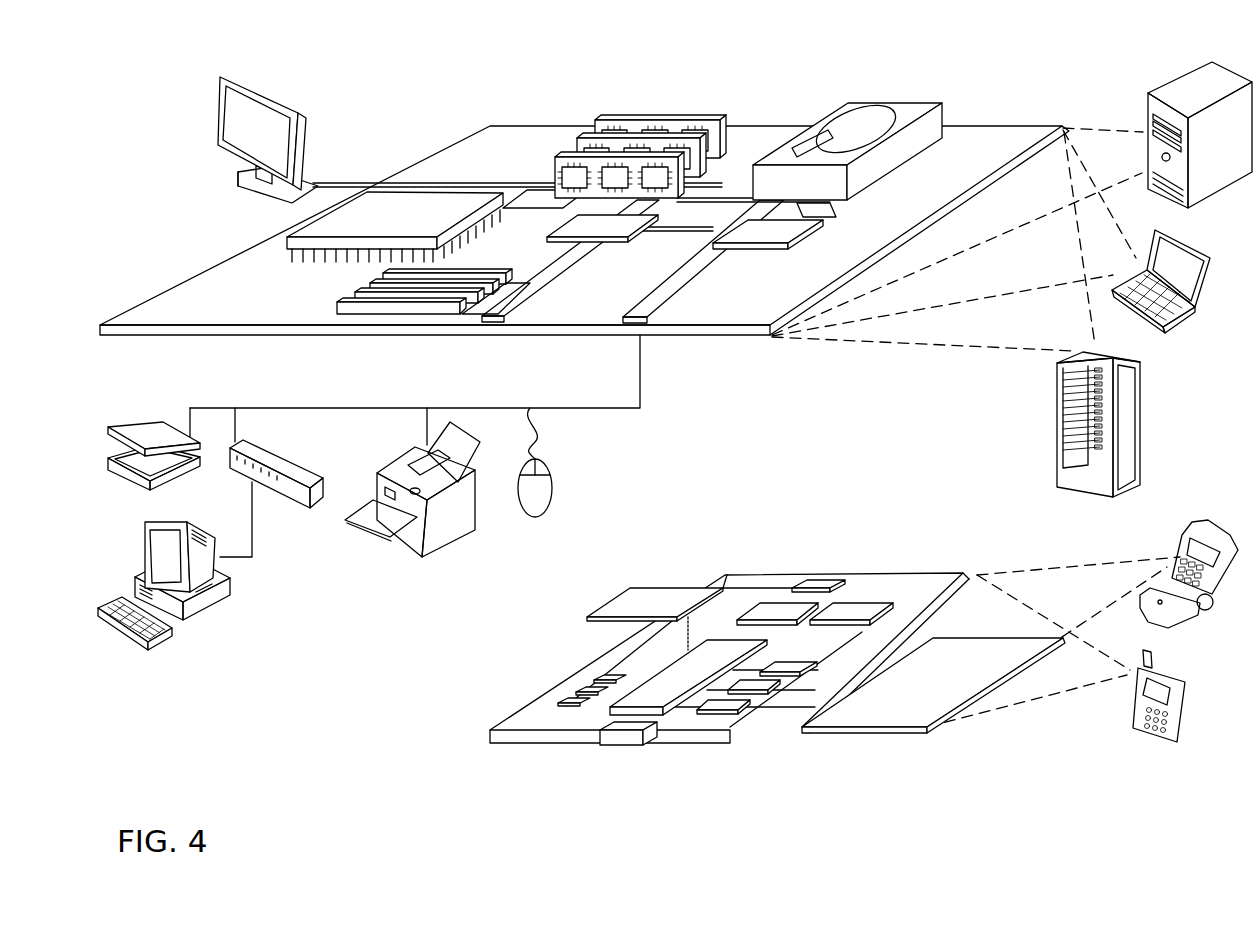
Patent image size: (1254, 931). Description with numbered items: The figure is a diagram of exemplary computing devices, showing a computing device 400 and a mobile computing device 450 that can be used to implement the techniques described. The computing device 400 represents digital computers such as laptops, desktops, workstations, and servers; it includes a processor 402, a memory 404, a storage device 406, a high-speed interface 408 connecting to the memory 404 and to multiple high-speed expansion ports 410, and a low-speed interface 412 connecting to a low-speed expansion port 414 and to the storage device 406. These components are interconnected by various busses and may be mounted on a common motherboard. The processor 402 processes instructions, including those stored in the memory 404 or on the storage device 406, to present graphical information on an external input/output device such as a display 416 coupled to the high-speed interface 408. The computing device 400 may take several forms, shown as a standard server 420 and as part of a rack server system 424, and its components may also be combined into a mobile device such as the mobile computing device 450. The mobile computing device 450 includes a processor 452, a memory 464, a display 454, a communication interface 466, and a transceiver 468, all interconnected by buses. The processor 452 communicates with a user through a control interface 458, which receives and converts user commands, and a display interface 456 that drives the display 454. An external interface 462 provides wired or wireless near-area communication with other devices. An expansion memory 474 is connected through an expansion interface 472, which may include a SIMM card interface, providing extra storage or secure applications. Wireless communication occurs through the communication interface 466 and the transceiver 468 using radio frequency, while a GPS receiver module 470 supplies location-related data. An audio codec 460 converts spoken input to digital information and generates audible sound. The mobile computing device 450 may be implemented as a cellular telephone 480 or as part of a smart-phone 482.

The computing device 400 is at (410, 98).
The processor 402 is at (287, 237).
The memory 404 is at (602, 118).
The storage device 406 is at (838, 103).
The high-speed interface 408 is at (578, 228).
The high-speed expansion ports 410 is at (350, 298).
The low-speed interface 412 is at (750, 230).
The low-speed expansion port 414 is at (647, 322).
The display 416 is at (225, 75).
The standard server 420 is at (1148, 113).
The rack server system 424 is at (1057, 448).
The mobile computing device 450 is at (463, 744).
The processor 452 is at (660, 702).
The display 454 is at (895, 717).
The display interface 456 is at (727, 708).
The control interface 458 is at (750, 684).
The audio codec 460 is at (783, 672).
The external interface 462 is at (627, 732).
The memory 464 is at (577, 694).
The communication interface 466 is at (778, 612).
The transceiver 468 is at (853, 610).
The GPS receiver module 470 is at (828, 578).
The expansion interface 472 is at (710, 588).
The expansion memory 474 is at (625, 615).
The cellular telephone 480 is at (1186, 527).
The smart-phone 482 is at (1135, 708).